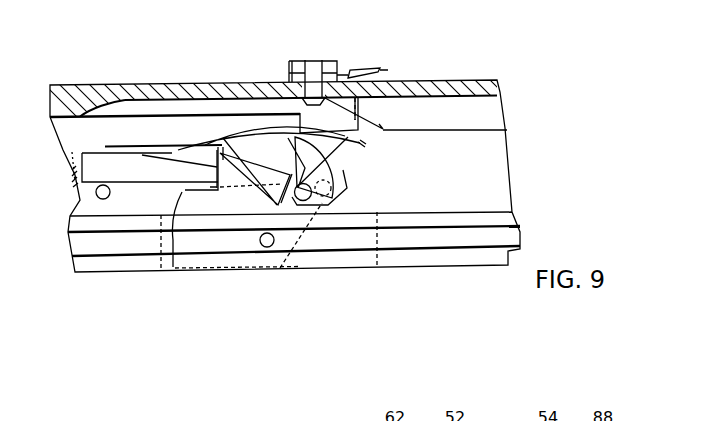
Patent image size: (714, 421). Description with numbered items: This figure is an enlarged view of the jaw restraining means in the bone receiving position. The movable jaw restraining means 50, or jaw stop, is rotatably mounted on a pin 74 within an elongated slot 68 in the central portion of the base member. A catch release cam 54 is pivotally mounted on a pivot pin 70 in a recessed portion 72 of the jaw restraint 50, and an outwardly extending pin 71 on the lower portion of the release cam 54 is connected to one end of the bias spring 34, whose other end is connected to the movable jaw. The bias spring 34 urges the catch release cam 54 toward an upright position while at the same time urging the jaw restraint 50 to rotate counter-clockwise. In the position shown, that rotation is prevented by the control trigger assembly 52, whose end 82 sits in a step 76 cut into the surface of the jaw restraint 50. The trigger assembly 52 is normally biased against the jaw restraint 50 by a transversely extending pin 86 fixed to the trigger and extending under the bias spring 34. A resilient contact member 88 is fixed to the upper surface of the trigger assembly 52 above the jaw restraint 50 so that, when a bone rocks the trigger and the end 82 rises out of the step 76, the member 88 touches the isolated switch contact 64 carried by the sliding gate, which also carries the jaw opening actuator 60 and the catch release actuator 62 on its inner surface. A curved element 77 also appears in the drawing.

The bias spring 34 is at (62, 188).
The movable jaw restraining means 50 is at (197, 200).
The control trigger assembly 52 is at (143, 166).
The catch release cam 54 is at (342, 156).
The jaw opening actuator 60 is at (348, 121).
The catch release actuator 62 is at (475, 110).
The switch contact 64 is at (301, 67).
The elongated slot 68 is at (357, 262).
The pivot pin 70 is at (347, 193).
The outwardly extending pin 71 is at (306, 199).
The recessed portion 72 is at (352, 185).
The pin 74 is at (262, 248).
The step 76 is at (185, 189).
The arcuate spring 77 is at (247, 170).
The end of the trigger assembly 82 is at (207, 175).
The transversely extending pin 86 is at (99, 196).
The resilient contact member 88 is at (360, 141).